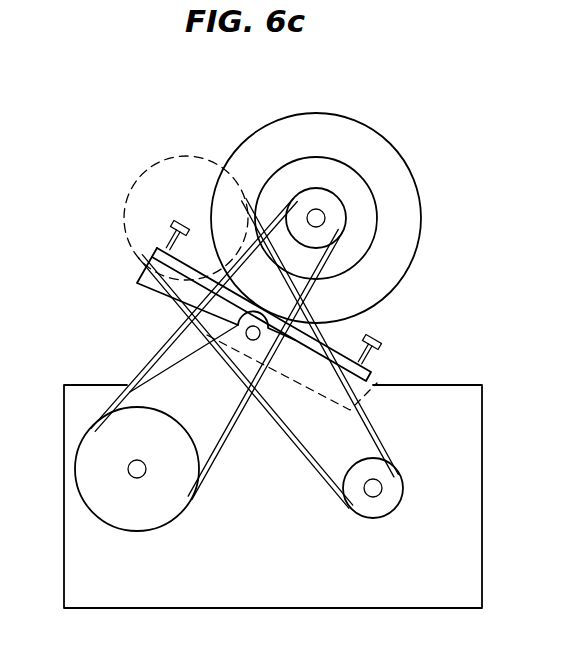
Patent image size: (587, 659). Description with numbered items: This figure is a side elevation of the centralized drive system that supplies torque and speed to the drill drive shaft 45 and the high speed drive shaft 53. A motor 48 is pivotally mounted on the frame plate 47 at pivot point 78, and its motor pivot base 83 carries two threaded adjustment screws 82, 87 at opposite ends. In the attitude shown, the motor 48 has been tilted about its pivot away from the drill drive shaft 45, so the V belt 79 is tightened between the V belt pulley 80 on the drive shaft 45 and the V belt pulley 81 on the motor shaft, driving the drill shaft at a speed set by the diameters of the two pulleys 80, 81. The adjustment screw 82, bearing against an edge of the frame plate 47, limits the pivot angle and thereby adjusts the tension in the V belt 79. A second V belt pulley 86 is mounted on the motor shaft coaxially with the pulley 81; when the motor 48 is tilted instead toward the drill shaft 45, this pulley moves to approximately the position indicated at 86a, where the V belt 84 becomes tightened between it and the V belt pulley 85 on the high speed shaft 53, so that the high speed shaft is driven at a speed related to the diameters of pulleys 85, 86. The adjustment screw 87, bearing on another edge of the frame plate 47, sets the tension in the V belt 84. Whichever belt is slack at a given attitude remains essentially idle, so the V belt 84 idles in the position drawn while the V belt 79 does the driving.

The frame plate 47 is at (432, 580).
The motor 48 is at (349, 128).
The V belt pulley 86 is at (292, 172).
The position of V belt pulley 86 86a is at (162, 157).
The V belt pulley 81 is at (340, 215).
The V belt pulley 80 is at (95, 440).
The drill drive shaft 45 is at (131, 468).
The V belt pulley 85 is at (394, 472).
The high speed drive shaft 53 is at (378, 489).
The V belt 79 is at (165, 352).
The V belt 84 is at (375, 433).
The motor pivot base 83 is at (152, 262).
The pivot point 78 is at (240, 331).
The adjustment screw 87 is at (160, 242).
The adjustment screw 82 is at (380, 353).